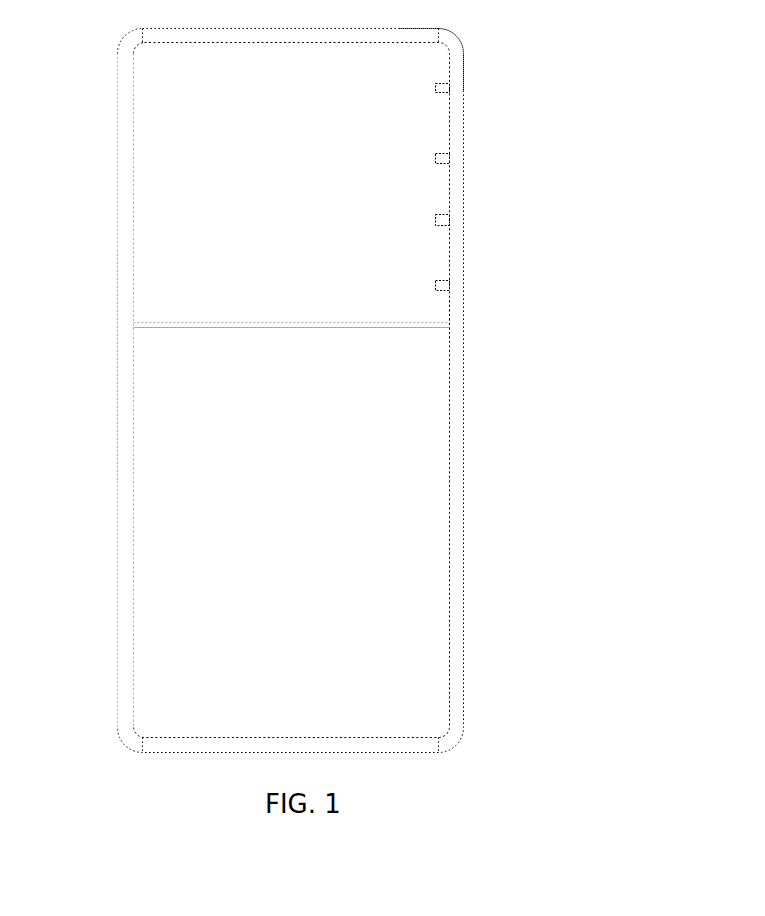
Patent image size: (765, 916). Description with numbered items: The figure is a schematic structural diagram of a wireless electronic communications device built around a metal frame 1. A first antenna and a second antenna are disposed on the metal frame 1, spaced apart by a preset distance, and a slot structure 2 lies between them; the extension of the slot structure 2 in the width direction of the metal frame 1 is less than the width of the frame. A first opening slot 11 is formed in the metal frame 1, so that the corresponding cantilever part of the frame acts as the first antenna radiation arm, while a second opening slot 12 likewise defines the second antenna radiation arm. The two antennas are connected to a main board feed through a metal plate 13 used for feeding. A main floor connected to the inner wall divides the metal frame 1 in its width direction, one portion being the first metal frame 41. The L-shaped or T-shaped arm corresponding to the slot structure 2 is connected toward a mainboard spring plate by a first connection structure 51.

The metal frame 1 is at (449, 522).
The slot structure 2 is at (448, 189).
The first opening slot 11 is at (443, 55).
The second opening slot 12 is at (449, 317).
The metal plate 13 is at (449, 90).
The first metal frame 41 is at (84, 366).
The first connection structure 51 is at (434, 158).